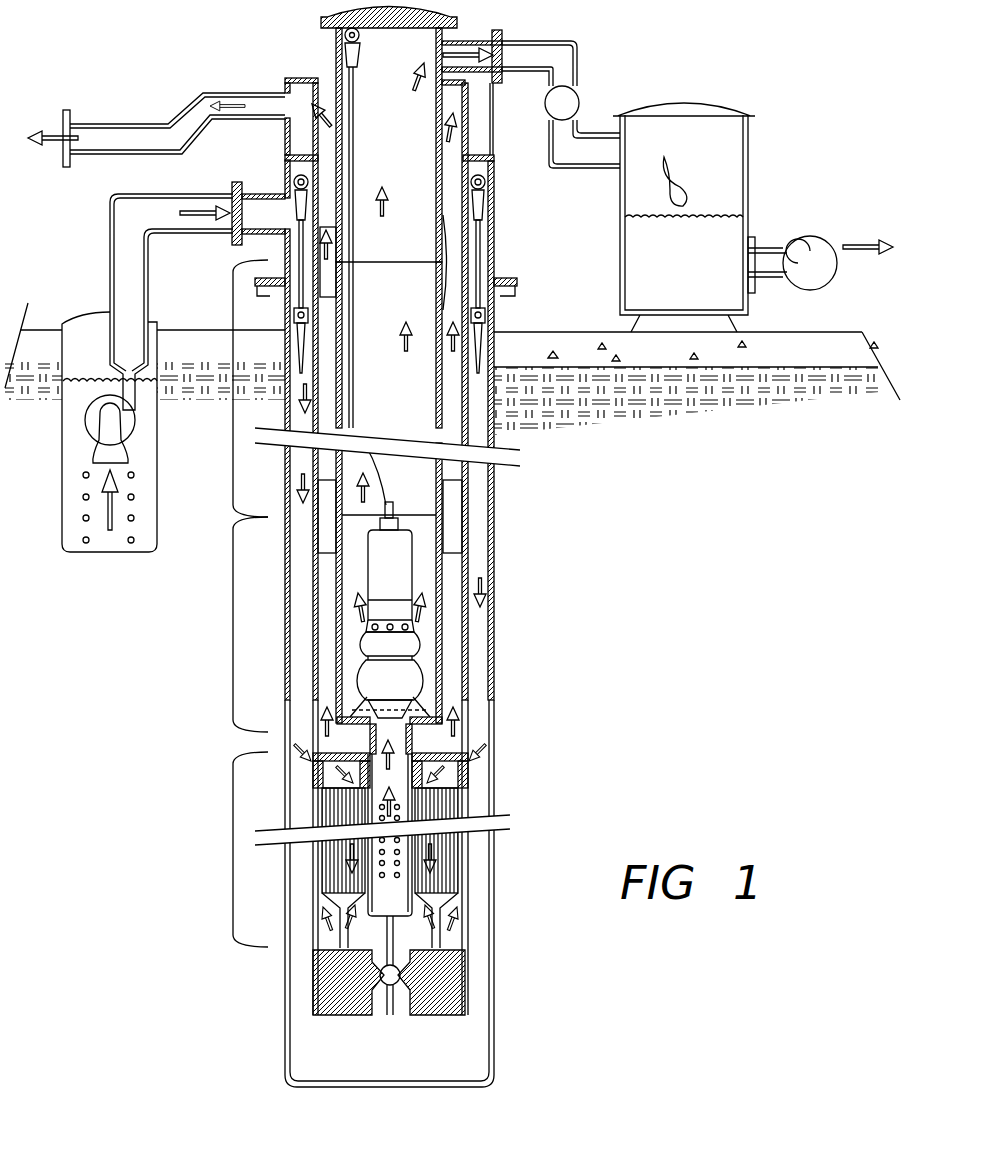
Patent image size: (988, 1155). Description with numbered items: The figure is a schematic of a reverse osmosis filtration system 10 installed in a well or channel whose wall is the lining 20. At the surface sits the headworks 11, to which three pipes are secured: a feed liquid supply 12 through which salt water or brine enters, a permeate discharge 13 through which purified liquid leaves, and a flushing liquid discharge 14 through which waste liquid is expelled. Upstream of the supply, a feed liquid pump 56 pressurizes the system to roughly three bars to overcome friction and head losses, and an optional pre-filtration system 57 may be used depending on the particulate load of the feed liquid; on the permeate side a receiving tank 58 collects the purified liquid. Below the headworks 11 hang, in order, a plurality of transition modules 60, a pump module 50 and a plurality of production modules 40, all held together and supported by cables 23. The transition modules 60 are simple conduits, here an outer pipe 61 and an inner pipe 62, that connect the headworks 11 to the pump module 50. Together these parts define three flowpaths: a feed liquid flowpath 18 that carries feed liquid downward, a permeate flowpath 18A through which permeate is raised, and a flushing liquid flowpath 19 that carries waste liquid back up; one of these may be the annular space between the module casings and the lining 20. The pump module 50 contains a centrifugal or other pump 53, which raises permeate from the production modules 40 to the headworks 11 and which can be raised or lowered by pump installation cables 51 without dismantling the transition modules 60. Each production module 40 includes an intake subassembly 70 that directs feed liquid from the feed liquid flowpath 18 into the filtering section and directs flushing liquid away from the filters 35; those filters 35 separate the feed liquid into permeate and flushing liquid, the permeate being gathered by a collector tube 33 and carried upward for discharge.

The filtration system 10 is at (598, 675).
The headworks 11 is at (337, 63).
The feed liquid supply 12 is at (267, 195).
The permeate discharge 13 is at (472, 30).
The flushing liquid discharge 14 is at (313, 90).
The feed liquid flowpath 18 is at (483, 633).
The permeate flowpath 18A is at (416, 220).
The flushing liquid flowpath 19 is at (450, 684).
The lining 20 is at (287, 480).
The cables 23 is at (478, 382).
The collector tube 33 is at (413, 810).
The filters 35 is at (443, 872).
The production modules 40 is at (233, 853).
The pump module 50 is at (233, 615).
The pump installation cables 51 is at (357, 138).
The pump 53 is at (368, 587).
The feed liquid pump 56 is at (128, 428).
The pre-filtration system 57 is at (62, 477).
The receiving tank 58 is at (749, 178).
The transition modules 60 is at (233, 425).
The outer pipe 61 is at (481, 470).
The inner pipe 62 is at (435, 368).
The intake subassembly 70 is at (315, 775).